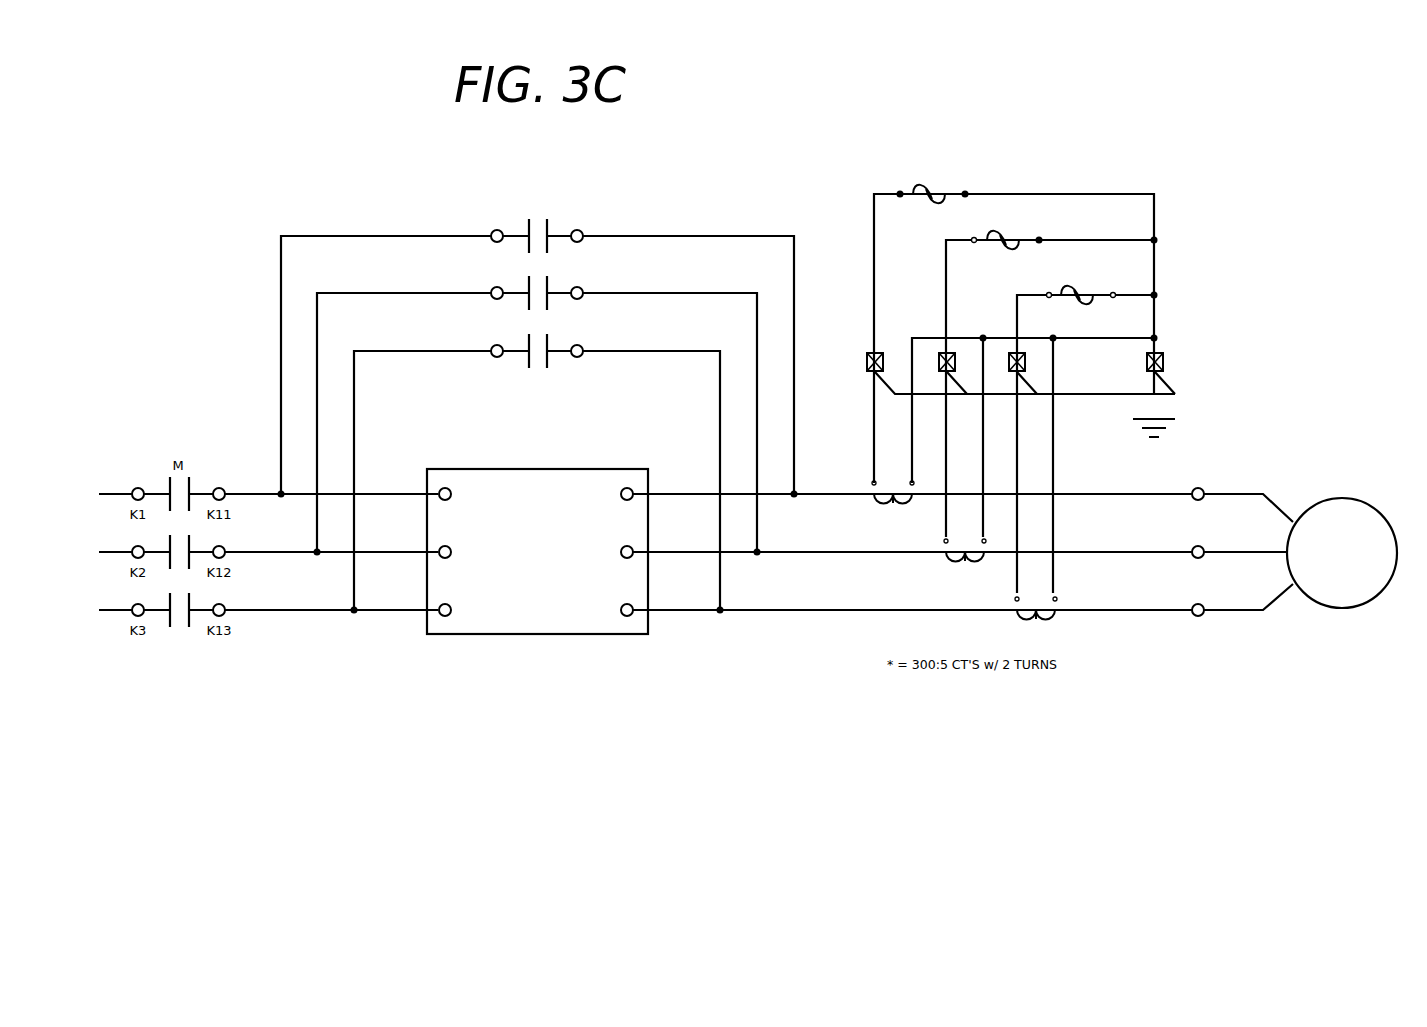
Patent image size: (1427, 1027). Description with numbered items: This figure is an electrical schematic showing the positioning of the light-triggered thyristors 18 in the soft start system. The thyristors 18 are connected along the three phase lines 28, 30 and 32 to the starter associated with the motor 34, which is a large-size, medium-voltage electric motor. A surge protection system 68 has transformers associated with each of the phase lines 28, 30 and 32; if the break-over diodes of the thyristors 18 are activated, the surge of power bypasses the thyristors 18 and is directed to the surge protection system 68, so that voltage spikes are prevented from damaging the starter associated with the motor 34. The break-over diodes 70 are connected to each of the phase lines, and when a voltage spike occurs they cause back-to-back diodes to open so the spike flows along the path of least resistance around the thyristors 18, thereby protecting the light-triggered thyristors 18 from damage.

The light-triggered thyristors 18 is at (550, 656).
The phase line 28 is at (811, 610).
The phase line 30 is at (867, 552).
The phase line 32 is at (1074, 490).
The motor 34 is at (1333, 498).
The surge protection system 68 is at (1162, 182).
The break-over diodes 70 is at (643, 212).